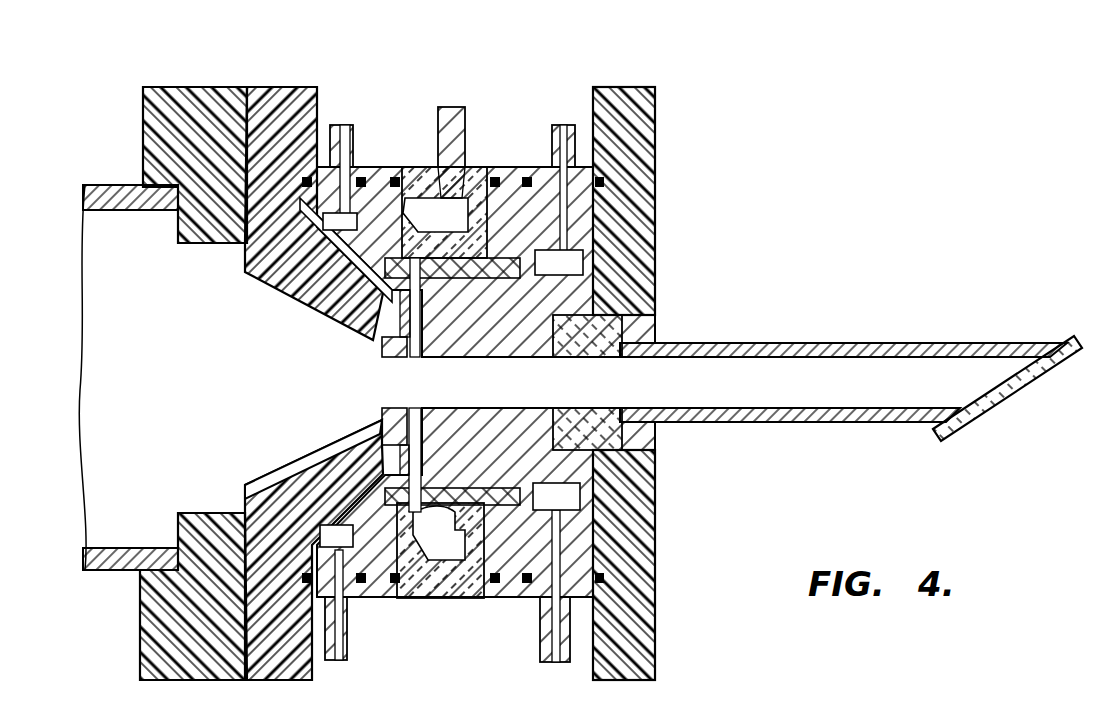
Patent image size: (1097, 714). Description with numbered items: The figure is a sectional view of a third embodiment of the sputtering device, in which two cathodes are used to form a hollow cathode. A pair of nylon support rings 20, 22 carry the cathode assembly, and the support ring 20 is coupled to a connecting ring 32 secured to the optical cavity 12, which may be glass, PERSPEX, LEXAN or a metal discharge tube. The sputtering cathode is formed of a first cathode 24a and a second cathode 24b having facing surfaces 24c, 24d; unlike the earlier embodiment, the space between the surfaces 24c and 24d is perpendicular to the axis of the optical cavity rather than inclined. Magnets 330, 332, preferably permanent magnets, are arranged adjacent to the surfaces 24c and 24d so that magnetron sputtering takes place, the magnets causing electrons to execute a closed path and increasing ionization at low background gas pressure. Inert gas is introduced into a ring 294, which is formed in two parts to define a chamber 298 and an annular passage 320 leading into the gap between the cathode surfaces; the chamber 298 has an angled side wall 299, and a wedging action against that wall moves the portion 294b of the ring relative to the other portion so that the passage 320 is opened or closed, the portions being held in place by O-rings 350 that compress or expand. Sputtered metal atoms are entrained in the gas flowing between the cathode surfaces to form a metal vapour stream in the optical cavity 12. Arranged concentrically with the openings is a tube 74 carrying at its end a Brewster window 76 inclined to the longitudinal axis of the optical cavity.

The optical cavity 12 is at (118, 230).
The support ring 20 is at (286, 100).
The support ring 22 is at (645, 95).
The first cathode 24a is at (575, 216).
The second cathode 24b is at (372, 272).
The surface of first cathode 24c is at (385, 410).
The surface of second cathode 24d is at (376, 441).
The connecting ring 32 is at (207, 98).
The tube 74 is at (827, 423).
The Brewster window 76 is at (1012, 388).
The ring 294 is at (423, 168).
The portion of ring 294b is at (385, 185).
The chamber 298 is at (462, 215).
The angled side wall 299 is at (413, 557).
The annular passage 320 is at (455, 532).
The magnet 330 is at (375, 340).
The magnet 332 is at (402, 312).
The O-rings 350 is at (527, 574).